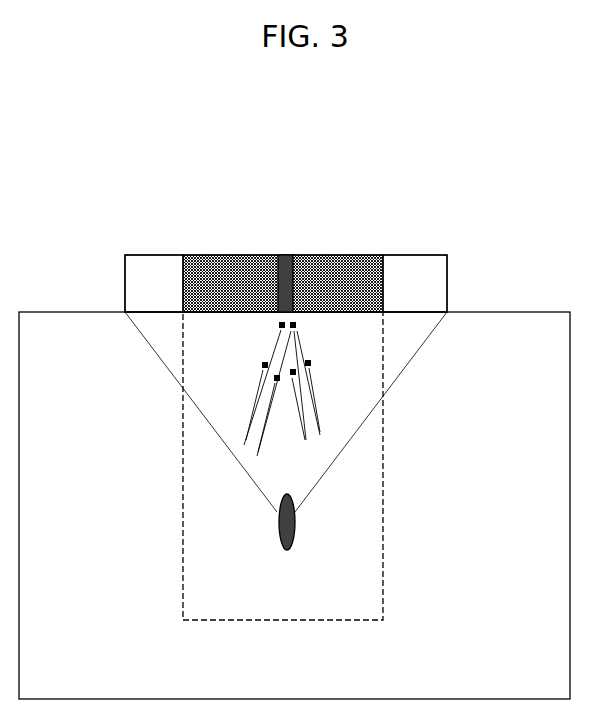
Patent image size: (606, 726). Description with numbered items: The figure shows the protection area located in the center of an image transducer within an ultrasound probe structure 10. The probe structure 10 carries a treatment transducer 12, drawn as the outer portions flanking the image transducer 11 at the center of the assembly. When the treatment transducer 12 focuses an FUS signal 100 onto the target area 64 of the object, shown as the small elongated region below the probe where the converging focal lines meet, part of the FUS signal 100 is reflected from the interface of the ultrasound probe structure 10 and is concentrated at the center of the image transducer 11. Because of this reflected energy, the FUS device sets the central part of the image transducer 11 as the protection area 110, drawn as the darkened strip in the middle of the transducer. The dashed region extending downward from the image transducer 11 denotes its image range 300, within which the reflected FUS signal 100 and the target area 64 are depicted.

The ultrasound probe structure 10 is at (282, 189).
The image transducer 11 is at (377, 254).
The protection area 110 is at (285, 254).
The treatment transducer 12 is at (147, 254).
The FUS signal 100 is at (320, 388).
The target area 64 is at (279, 540).
The image range 300 is at (383, 537).